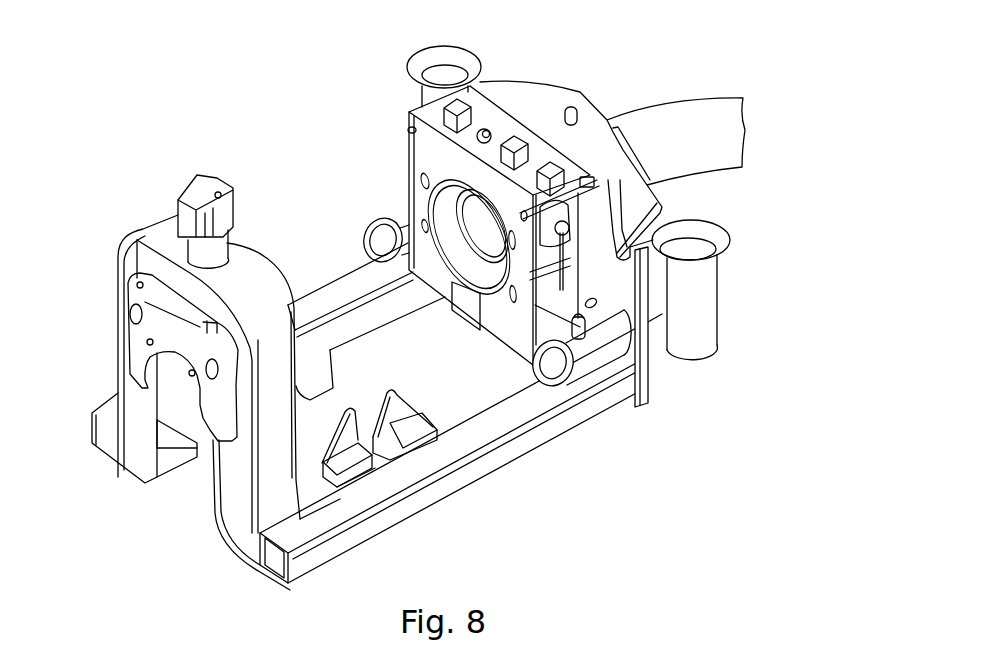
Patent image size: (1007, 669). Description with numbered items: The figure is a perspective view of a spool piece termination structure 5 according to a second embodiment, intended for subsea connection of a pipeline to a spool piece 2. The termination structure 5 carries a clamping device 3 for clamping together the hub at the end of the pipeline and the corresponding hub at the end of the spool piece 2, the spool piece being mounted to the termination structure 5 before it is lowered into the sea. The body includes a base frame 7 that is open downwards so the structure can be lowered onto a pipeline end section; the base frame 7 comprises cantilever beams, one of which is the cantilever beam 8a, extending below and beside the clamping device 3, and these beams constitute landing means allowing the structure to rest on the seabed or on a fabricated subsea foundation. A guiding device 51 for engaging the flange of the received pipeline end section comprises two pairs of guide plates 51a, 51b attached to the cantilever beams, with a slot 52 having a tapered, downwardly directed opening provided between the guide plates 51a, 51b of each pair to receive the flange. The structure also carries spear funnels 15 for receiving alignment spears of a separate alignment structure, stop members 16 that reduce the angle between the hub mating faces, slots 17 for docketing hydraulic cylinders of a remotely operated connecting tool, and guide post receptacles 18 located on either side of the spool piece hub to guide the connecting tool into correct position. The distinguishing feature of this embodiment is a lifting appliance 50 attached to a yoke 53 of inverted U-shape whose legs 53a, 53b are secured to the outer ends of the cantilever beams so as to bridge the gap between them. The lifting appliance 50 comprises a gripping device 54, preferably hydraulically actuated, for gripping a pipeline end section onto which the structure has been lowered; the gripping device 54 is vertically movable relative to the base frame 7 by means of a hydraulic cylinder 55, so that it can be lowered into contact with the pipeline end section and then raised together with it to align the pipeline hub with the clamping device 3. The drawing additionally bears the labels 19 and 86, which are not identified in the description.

The spool piece 2 is at (665, 112).
The clamping device 3 is at (478, 267).
The spool piece termination structure 5 is at (329, 129).
The base frame 7 is at (336, 263).
The cantilever beam 8a is at (510, 450).
The spear funnel 15 is at (393, 218).
The stop member 16 is at (412, 128).
The slot 17 is at (640, 240).
The guide post receptacle 18 is at (433, 78).
The peg 19 is at (572, 108).
The lifting appliance 50 is at (150, 204).
The guiding device 51 is at (388, 362).
The guide plate 51a is at (341, 443).
The guide plate 51b is at (390, 410).
The slot 52 is at (367, 418).
The yoke 53 is at (242, 263).
The leg 53a is at (225, 492).
The leg 53b is at (137, 442).
The gripping device 54 is at (135, 340).
The hydraulic cylinder 55 is at (223, 247).
The support plate 86 is at (303, 302).